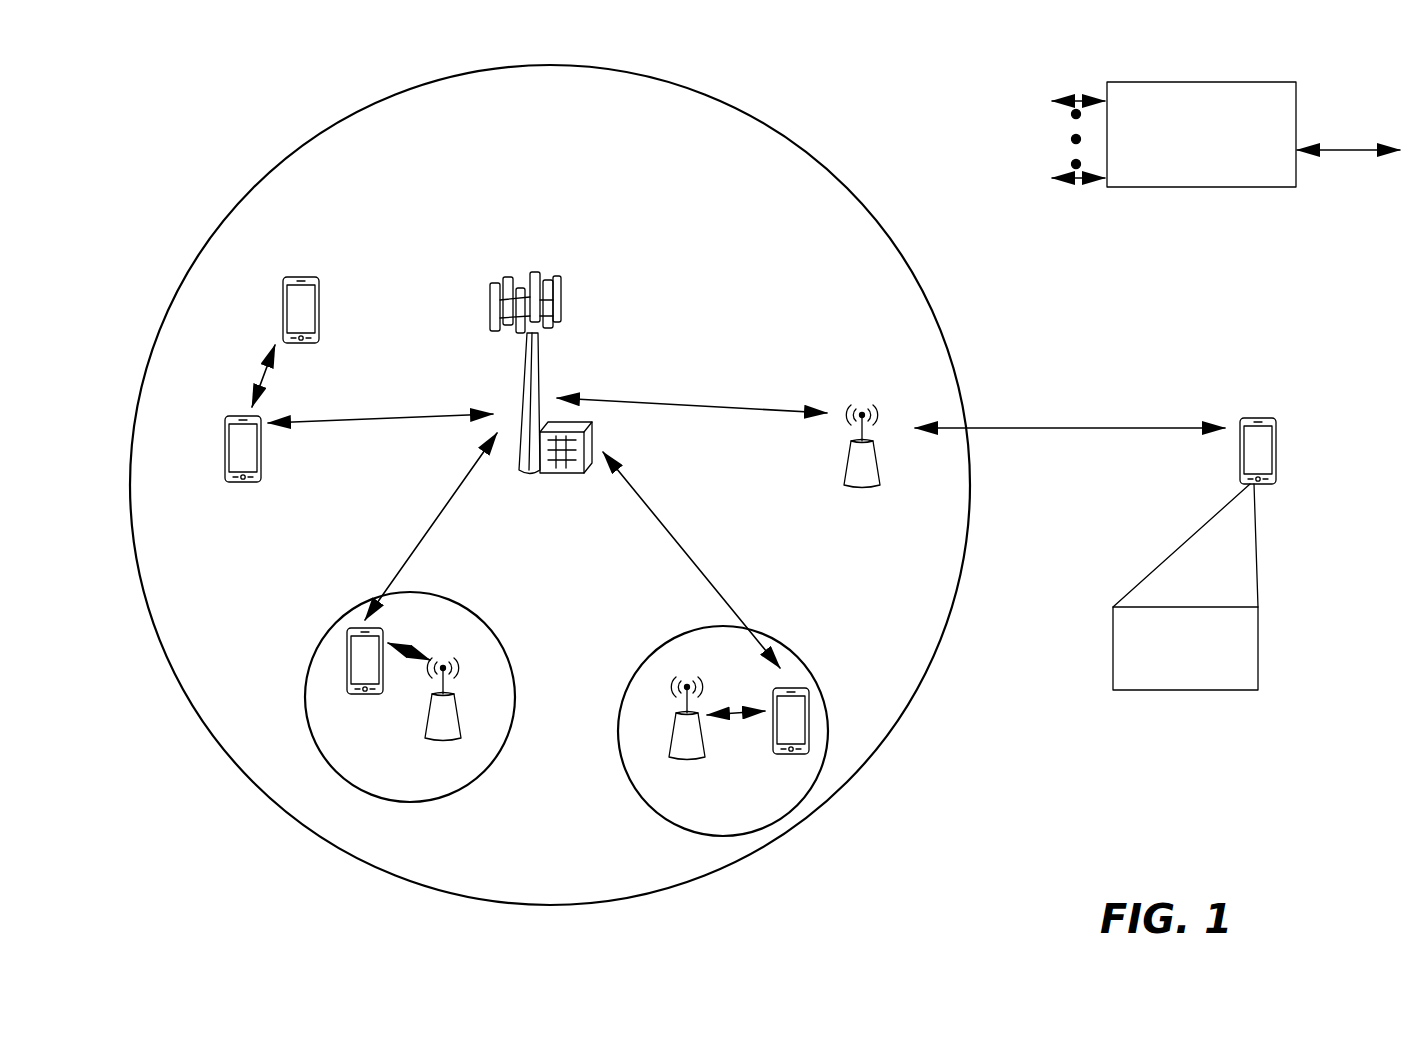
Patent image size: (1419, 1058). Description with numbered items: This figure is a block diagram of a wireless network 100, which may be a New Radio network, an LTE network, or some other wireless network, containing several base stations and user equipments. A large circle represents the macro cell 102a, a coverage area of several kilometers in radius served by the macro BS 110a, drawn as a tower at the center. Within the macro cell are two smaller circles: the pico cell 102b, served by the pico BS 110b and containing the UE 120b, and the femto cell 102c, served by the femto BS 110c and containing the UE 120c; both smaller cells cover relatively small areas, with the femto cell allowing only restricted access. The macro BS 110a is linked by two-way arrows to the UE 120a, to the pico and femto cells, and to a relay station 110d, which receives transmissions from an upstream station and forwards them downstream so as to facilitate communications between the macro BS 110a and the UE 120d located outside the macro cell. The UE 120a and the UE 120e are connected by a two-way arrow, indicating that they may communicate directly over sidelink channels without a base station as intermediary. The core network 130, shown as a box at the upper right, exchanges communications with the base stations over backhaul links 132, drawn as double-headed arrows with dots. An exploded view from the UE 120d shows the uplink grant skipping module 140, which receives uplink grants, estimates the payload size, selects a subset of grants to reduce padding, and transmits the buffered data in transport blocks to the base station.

The wireless network 100 is at (205, 107).
The macro cell 102a is at (832, 172).
The pico cell 102b is at (500, 632).
The femto cell 102c is at (664, 643).
The macro BS 110a is at (540, 265).
The pico BS 110b is at (462, 726).
The femto BS 110c is at (672, 741).
The relay station 110d is at (862, 405).
The UE 120a is at (225, 440).
The UE 120b is at (350, 697).
The UE 120c is at (775, 758).
The UE 120d is at (1272, 488).
The UE 120e is at (283, 300).
The core network 130 is at (1176, 80).
The backhaul links 132 is at (1076, 98).
The uplink grant skipping module 140 is at (1190, 692).